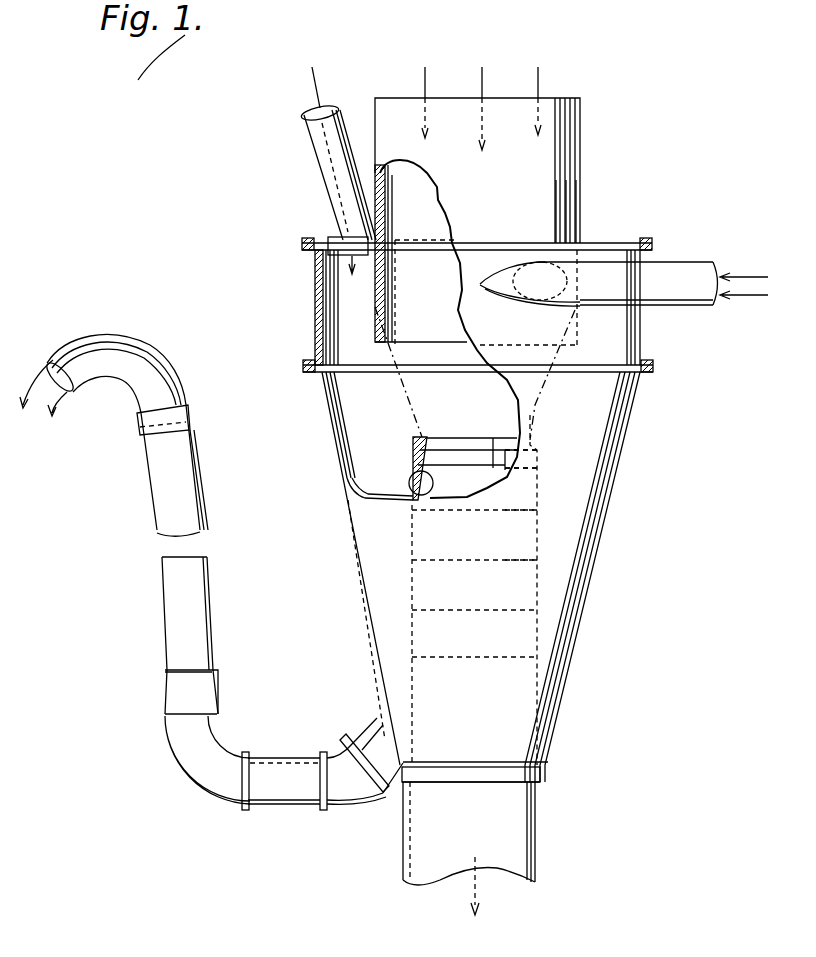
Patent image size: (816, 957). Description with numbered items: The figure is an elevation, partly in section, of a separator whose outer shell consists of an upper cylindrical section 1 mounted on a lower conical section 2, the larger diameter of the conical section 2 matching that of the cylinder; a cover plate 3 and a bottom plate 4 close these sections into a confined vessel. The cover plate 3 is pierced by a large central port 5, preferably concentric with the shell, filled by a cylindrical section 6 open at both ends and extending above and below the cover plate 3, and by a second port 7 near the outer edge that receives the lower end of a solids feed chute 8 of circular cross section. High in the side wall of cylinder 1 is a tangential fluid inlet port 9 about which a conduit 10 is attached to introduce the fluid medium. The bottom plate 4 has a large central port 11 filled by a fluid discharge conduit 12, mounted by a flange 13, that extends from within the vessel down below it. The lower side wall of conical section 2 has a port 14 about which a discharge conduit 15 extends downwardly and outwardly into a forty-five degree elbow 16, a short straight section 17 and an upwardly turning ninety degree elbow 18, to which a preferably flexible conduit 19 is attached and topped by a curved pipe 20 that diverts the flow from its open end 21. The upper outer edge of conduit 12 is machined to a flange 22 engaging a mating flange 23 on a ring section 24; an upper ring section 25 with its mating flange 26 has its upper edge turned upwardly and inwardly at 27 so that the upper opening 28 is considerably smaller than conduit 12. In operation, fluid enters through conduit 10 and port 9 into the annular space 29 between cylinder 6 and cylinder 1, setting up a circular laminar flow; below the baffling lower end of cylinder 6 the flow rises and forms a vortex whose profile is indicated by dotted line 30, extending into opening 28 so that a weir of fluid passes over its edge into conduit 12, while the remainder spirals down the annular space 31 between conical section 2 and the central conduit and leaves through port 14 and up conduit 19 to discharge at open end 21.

The upper cylindrical section 1 is at (640, 344).
The lower conical section 2 is at (610, 500).
The cover plate 3 is at (623, 243).
The bottom plate 4 is at (560, 770).
The large central port 5 is at (553, 243).
The cylindrical section 6 is at (582, 130).
The second port 7 is at (347, 252).
The solids feed chute 8 is at (308, 178).
The fluid inlet port 9 is at (515, 268).
The conduit 10 is at (690, 264).
The large central port 11 is at (553, 755).
The conduit 12 is at (530, 853).
The flange 13 is at (545, 784).
The port 14 is at (380, 718).
The discharge conduit 15 is at (366, 737).
The 45° elbow 16 is at (352, 804).
The short straight section 17 is at (267, 808).
The 90° elbow 18 is at (180, 775).
The conduit 19 is at (165, 588).
The curved pipe 20 is at (120, 340).
The open end 21 is at (36, 403).
The flange 22 is at (418, 500).
The mating flange 23 is at (537, 515).
The ring section 24 is at (537, 455).
The upper ring section 25 is at (413, 458).
The mating flange 26 is at (418, 484).
The upwardly and inwardly turned edge 27 is at (414, 442).
The upper opening 28 is at (460, 447).
The annular space 29 is at (338, 315).
The dotted line 30 is at (402, 384).
The annular space 31 is at (560, 603).